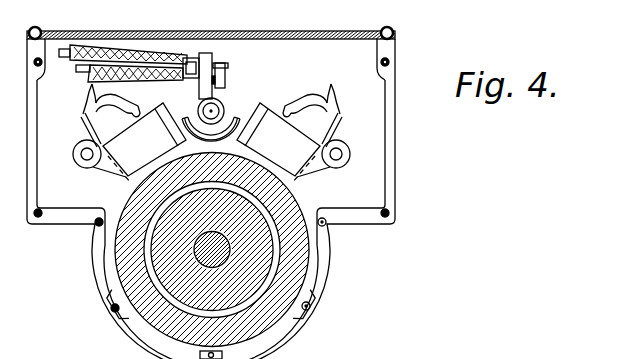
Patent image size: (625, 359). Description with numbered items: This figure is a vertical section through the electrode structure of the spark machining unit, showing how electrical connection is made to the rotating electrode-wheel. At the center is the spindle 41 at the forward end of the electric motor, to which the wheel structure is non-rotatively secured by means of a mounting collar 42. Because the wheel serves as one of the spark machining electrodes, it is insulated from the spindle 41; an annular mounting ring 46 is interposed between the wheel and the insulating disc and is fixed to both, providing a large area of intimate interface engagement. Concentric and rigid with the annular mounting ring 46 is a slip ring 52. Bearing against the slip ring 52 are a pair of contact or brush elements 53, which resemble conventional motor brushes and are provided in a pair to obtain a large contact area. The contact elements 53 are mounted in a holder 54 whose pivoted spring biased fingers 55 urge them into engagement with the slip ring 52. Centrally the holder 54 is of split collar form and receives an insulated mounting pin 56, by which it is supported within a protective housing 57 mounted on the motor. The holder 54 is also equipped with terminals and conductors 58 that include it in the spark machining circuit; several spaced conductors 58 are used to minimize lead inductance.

The spindle 41 is at (216, 250).
The mounting collar 42 is at (170, 222).
The annular mounting ring 46 is at (300, 255).
The slip ring 52 is at (297, 204).
The contact elements 53 is at (155, 112).
The holder 54 is at (101, 168).
The spring biased fingers 55 is at (88, 104).
The insulated mounting pin 56 is at (203, 102).
The protective housing 57 is at (390, 133).
The conductors 58 is at (160, 67).